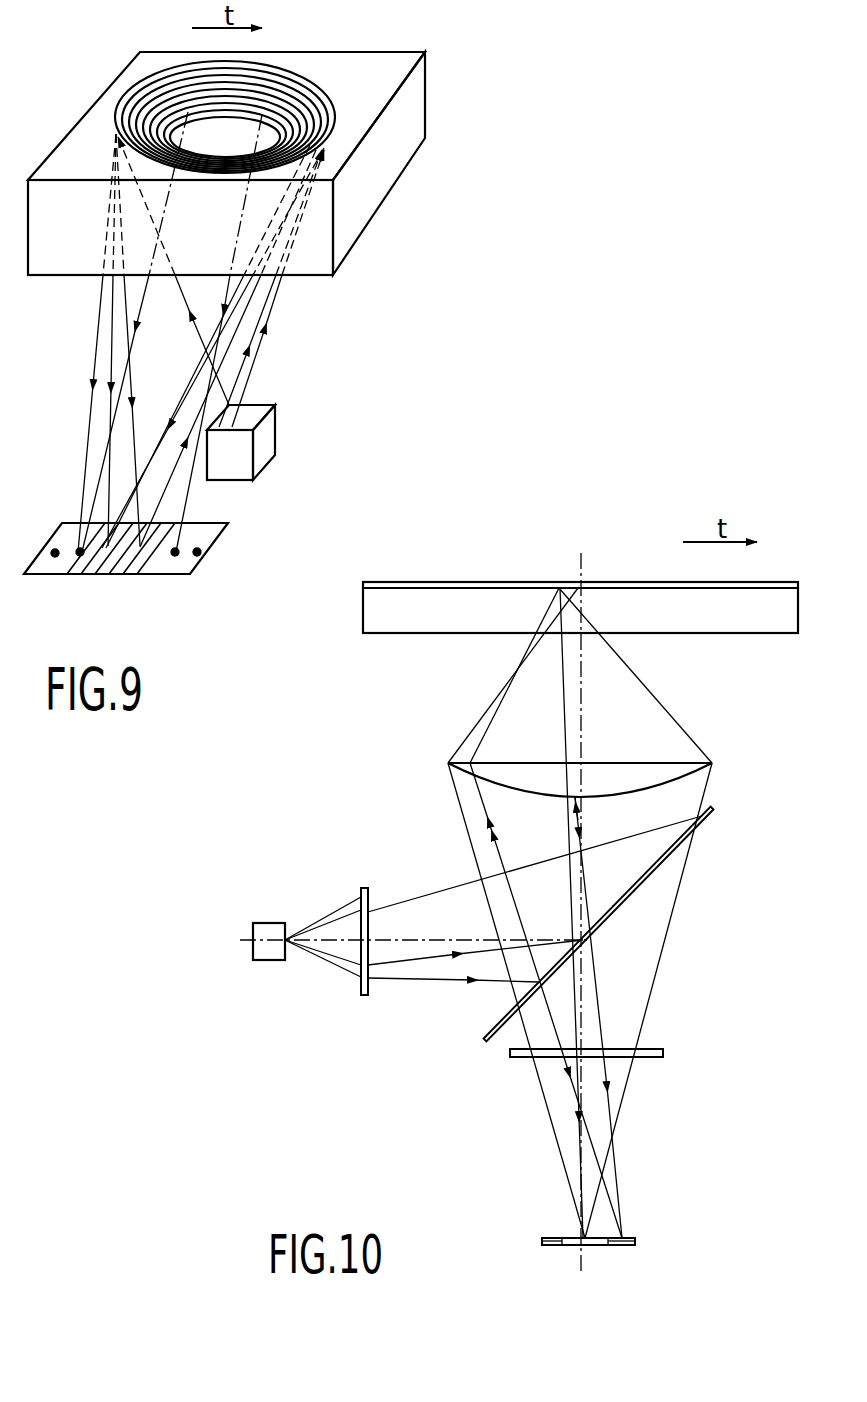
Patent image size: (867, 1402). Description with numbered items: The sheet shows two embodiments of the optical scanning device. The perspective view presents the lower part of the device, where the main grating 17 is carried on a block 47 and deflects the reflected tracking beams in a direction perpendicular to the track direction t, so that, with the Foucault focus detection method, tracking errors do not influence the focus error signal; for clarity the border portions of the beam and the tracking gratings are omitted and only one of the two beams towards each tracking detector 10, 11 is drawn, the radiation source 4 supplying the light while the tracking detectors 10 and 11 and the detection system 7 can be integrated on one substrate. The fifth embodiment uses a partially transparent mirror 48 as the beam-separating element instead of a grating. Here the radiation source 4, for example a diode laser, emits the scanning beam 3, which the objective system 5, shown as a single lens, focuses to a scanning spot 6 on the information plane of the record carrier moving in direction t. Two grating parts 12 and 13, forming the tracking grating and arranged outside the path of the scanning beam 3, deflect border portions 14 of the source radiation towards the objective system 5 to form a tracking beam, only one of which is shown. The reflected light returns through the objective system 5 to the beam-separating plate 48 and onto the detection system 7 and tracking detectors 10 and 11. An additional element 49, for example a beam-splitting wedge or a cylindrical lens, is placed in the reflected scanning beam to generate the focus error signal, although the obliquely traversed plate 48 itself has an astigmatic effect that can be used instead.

In FIG. 10, the scanning beam 3 is at (323, 947).
In FIG. 9, the radiation source 4 is at (265, 437).
In FIG. 10, the radiation source 4 is at (271, 955).
In FIG. 10, the objective system 5 is at (692, 767).
In FIG. 10, the scanning spot 6 is at (580, 587).
In FIG. 9, the detection system 7 is at (120, 565).
In FIG. 10, the detection system 7 is at (597, 1247).
In FIG. 9, the tracking detector 10 is at (57, 565).
In FIG. 10, the tracking detector 10 is at (556, 1237).
In FIG. 9, the tracking detector 11 is at (166, 565).
In FIG. 10, the tracking detector 11 is at (628, 1238).
In FIG. 10, the grating part 12 is at (368, 908).
In FIG. 10, the grating part 13 is at (368, 973).
In FIG. 10, the portions of the source radiation 14 is at (340, 917).
In FIG. 9, the main grating 17 is at (290, 92).
In FIG. 9, the transparent block 47 is at (418, 112).
In FIG. 10, the partially transparent mirror 48 is at (712, 812).
In FIG. 10, the additional element 49 is at (653, 1047).